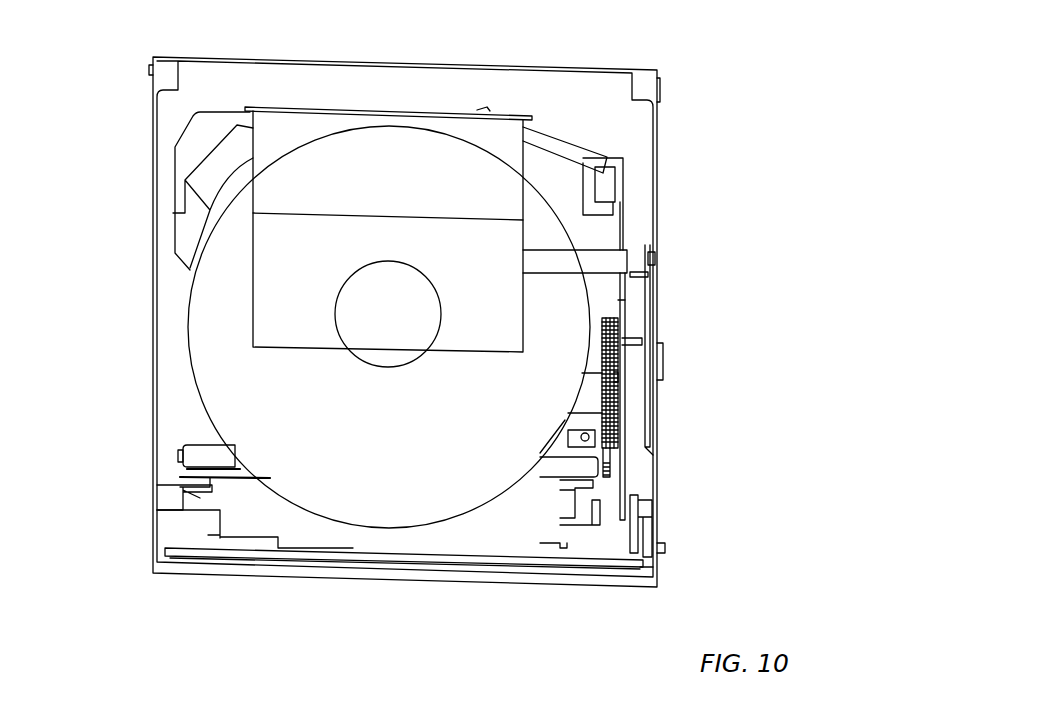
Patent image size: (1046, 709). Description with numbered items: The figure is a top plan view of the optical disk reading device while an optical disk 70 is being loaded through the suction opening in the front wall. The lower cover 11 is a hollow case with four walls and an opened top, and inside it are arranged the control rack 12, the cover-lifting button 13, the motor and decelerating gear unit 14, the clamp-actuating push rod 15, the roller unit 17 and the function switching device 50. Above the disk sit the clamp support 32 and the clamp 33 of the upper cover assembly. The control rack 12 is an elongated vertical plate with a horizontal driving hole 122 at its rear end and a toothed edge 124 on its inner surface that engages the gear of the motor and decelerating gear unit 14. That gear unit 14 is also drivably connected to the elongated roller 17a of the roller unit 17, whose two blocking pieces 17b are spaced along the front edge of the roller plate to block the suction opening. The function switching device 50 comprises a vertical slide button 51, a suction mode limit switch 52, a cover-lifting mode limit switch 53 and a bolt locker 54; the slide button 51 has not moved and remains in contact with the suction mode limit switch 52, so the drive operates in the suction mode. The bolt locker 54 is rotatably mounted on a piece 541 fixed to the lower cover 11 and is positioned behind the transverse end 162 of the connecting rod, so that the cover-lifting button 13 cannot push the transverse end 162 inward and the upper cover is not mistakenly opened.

The lower cover 11 is at (188, 567).
The control rack 12 is at (620, 235).
The cover-lifting button 13 is at (665, 548).
The motor and decelerating gear unit 14 is at (622, 403).
The clamp-actuating push rod 15 is at (553, 147).
The roller unit 17 is at (200, 497).
The roller 17a is at (205, 452).
The blocking pieces 17b is at (320, 548).
The clamp support 32 is at (422, 137).
The clamp 33 is at (347, 312).
The function switching device 50 is at (652, 333).
The slide button 51 is at (665, 365).
The suction mode limit switch 52 is at (655, 262).
The cover-lifting mode limit switch 53 is at (652, 520).
The bolt locker 54 is at (642, 548).
The disc 70 is at (210, 297).
The horizontal driving hole 122 is at (612, 185).
The toothed edge 124 is at (617, 377).
The transverse end 162 is at (657, 576).
The piece 541 is at (636, 530).